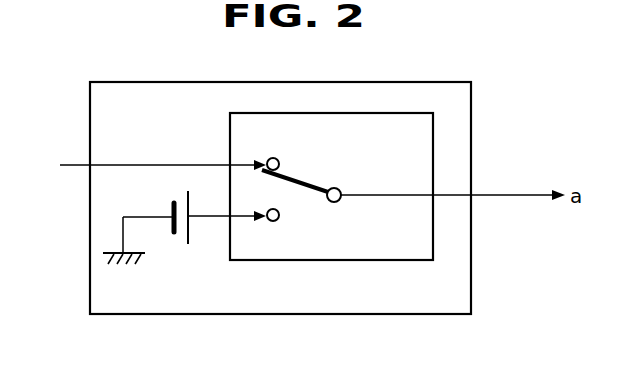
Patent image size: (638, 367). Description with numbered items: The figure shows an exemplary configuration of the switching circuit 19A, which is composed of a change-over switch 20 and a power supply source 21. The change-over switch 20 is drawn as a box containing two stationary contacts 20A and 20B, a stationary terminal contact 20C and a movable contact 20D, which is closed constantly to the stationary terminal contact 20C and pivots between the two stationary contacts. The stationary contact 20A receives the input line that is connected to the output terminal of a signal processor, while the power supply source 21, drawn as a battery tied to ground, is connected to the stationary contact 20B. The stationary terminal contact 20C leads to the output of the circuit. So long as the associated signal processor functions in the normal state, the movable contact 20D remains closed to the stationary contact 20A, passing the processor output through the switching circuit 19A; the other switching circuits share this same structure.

The switching circuit 19A is at (476, 108).
The change-over switch 20 is at (231, 127).
The stationary contact 20A is at (271, 157).
The stationary contact 20B is at (280, 220).
The stationary terminal contact 20C is at (334, 203).
The movable contact 20D is at (304, 183).
The power supply source 21 is at (182, 238).